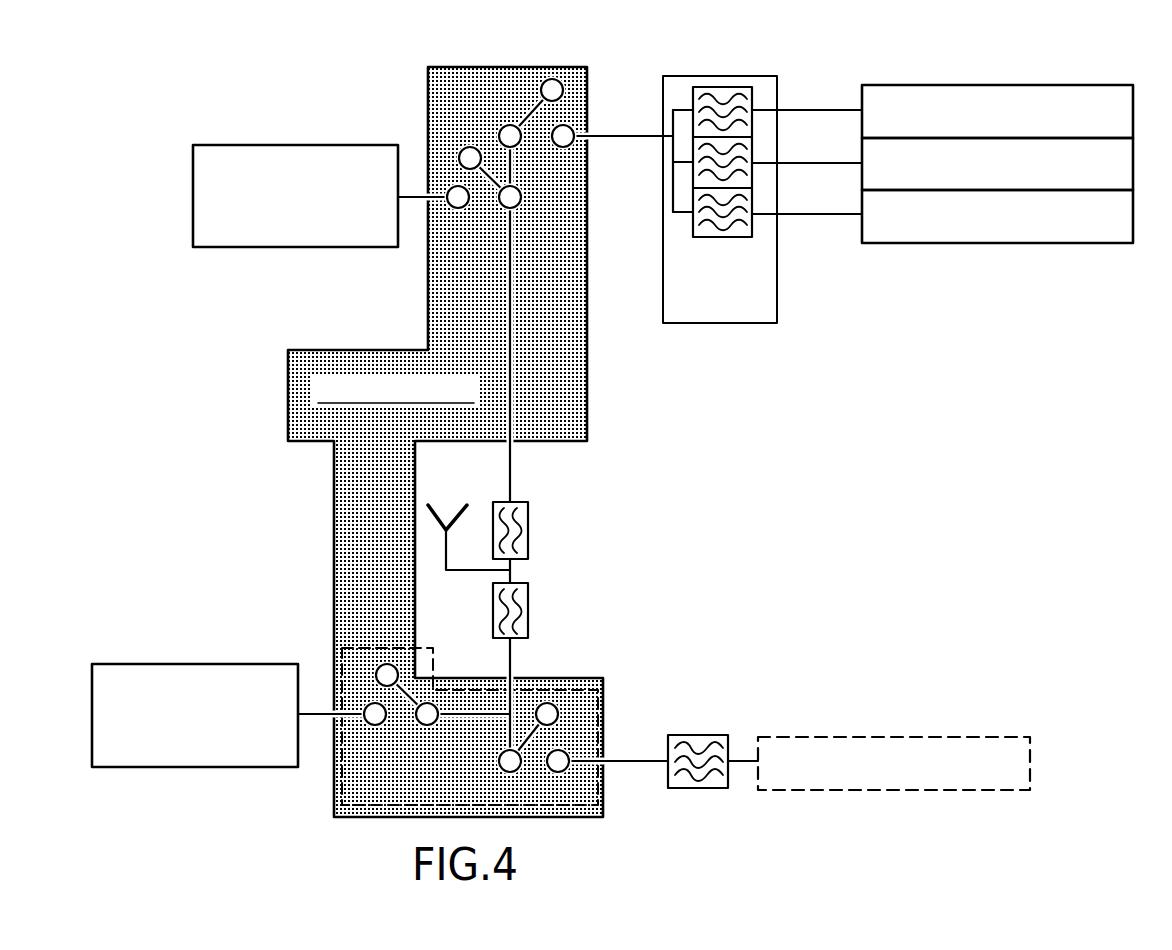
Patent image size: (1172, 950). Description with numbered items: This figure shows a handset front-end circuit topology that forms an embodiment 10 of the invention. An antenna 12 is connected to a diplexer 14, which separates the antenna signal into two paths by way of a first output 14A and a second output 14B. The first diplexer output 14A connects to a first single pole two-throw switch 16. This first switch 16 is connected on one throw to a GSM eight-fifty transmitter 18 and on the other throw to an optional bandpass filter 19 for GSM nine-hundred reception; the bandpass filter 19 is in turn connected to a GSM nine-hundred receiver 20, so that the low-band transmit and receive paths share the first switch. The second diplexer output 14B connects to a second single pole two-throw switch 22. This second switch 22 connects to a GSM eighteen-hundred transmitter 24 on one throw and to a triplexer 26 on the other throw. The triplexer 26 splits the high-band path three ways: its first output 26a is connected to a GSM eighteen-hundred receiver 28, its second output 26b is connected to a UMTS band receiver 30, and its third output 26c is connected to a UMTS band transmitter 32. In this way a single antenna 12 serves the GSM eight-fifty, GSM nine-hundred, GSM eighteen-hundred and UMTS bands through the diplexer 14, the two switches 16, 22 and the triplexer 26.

The embodiment 10 is at (80, 77).
The antenna 12 is at (461, 493).
The diplexer 14 is at (584, 562).
The first diplexer output 14A is at (510, 661).
The second diplexer output 14B is at (510, 464).
The first single pole two-throw switch 16 is at (603, 703).
The GSM 850 transmitter 18 is at (143, 700).
The bandpass filter for GSM 900 receiver 19 is at (695, 790).
The GSM 900 receiver 20 is at (1026, 775).
The second single pole two-throw switch 22 is at (512, 70).
The GSM 1800 transmitter 24 is at (244, 182).
The triplexer 26 is at (762, 199).
The first triplexer output 26a is at (753, 204).
The second triplexer output 26b is at (753, 153).
The third triplexer output 26c is at (753, 102).
The GSM 1800 receiver 28 is at (1126, 224).
The UMTS band receiver 30 is at (1126, 174).
The UMTS band transmitter 32 is at (1126, 123).